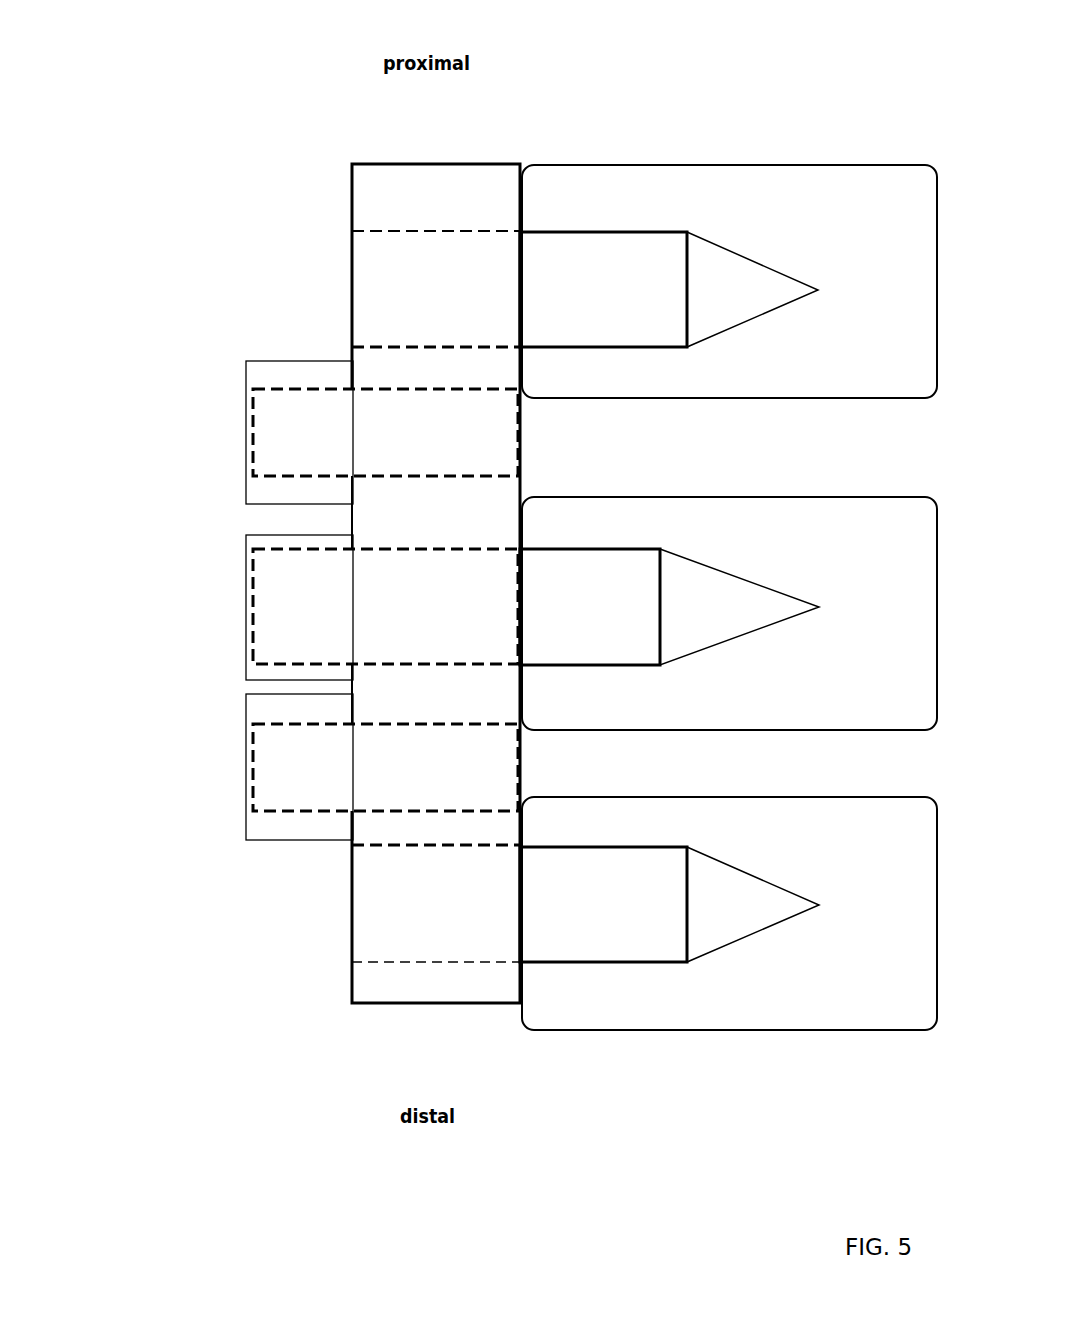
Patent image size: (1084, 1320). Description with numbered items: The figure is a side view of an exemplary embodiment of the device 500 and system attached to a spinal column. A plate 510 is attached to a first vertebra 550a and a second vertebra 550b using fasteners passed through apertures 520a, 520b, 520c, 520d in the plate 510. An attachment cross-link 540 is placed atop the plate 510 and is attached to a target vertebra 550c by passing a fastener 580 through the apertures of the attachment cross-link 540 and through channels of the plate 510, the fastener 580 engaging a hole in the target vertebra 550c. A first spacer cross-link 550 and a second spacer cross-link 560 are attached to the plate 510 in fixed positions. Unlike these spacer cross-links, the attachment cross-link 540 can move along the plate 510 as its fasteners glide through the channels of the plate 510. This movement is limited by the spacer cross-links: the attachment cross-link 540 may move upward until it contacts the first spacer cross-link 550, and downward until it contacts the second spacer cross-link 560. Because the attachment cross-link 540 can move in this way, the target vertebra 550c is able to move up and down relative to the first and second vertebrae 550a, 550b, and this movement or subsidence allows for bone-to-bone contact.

The device 500 is at (608, 92).
The plate 510 is at (355, 532).
The aperture 520a is at (326, 269).
The aperture 520b is at (333, 210).
The aperture 520c is at (320, 925).
The aperture 520d is at (326, 980).
The attachment cross-link 540 is at (205, 560).
The first spacer cross-link 550 is at (302, 399).
The first vertebra 550a is at (728, 281).
The second vertebra 550b is at (728, 913).
The target vertebra 550c is at (728, 613).
The second spacer cross-link 560 is at (295, 767).
The fastener 580 is at (288, 595).